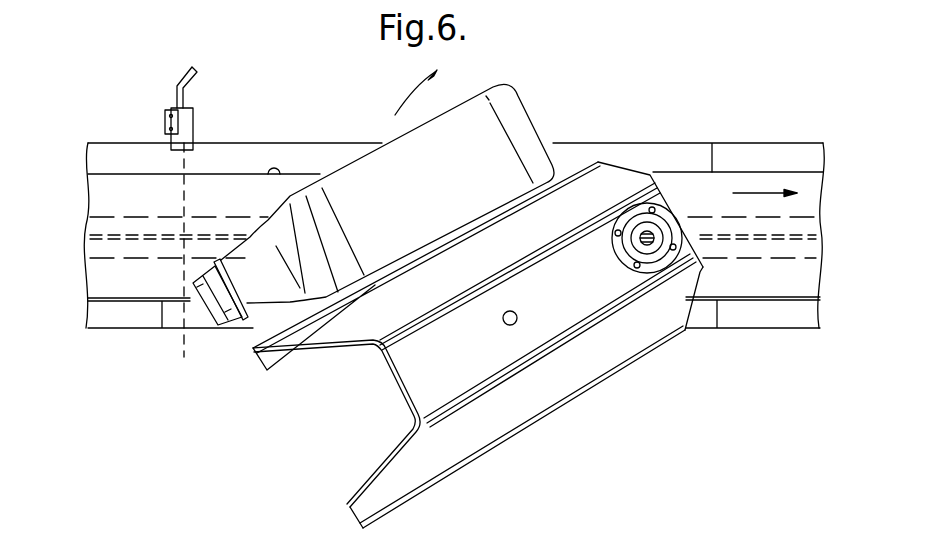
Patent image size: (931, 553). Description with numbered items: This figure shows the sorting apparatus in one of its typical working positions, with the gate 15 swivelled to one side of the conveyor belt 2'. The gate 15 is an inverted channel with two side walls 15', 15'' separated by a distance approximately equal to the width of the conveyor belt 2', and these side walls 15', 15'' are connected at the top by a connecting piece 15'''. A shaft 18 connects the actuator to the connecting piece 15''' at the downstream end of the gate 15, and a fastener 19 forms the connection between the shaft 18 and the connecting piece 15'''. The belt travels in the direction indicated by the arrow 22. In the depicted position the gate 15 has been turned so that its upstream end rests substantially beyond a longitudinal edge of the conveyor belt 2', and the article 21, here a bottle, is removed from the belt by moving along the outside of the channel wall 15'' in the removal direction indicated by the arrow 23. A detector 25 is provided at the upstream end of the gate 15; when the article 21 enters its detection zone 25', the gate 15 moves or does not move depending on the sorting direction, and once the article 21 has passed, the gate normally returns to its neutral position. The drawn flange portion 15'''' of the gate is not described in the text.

The conveyor belt 2' is at (454, 210).
The detector 25 is at (209, 108).
The detection zone 25' is at (230, 236).
The article 21 is at (385, 153).
The arrow 23 is at (432, 89).
The gate 15 is at (522, 433).
The side wall 15' is at (515, 424).
The side wall 15'' is at (541, 226).
The connecting piece 15''' is at (563, 349).
The chute guide flange 15'''' is at (392, 334).
The shaft 18 is at (650, 240).
The fastener 19 is at (627, 265).
The arrow 22 is at (752, 190).